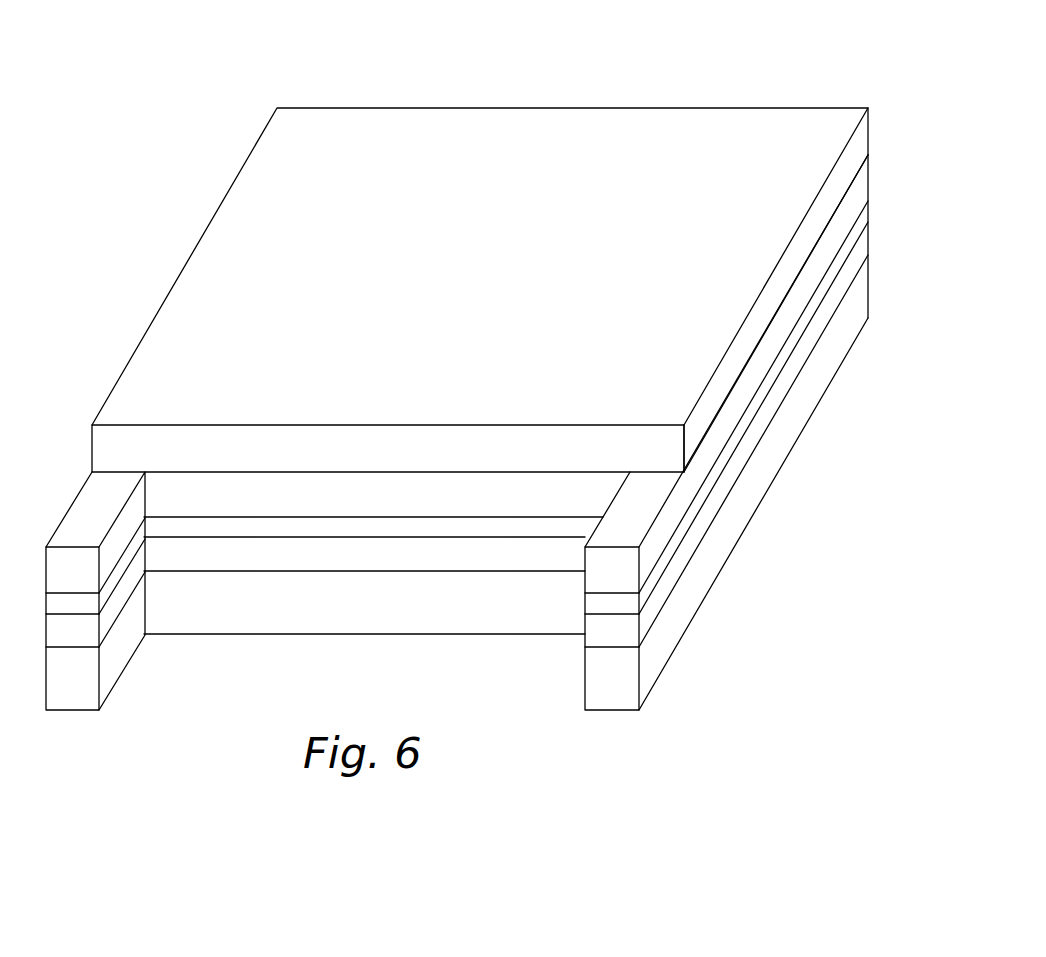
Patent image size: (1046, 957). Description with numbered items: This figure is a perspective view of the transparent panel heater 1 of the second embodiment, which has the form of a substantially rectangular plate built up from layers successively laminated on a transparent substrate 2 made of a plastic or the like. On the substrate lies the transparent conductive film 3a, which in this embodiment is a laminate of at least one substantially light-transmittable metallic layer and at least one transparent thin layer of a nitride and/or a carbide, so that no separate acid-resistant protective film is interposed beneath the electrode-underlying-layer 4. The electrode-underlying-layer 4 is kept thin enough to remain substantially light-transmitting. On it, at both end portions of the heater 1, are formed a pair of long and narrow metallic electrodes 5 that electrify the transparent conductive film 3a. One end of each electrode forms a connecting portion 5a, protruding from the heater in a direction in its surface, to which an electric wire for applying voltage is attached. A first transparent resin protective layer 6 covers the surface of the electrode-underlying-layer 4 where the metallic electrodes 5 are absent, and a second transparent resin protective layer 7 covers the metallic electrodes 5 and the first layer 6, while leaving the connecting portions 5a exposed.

The transparent panel heater 1 is at (208, 203).
The transparent substrate 2 is at (705, 557).
The transparent conductive film 3a is at (703, 517).
The electrode-underlying-layer 4 is at (749, 418).
The metallic electrodes 5 is at (757, 375).
The connecting portion 5a is at (77, 522).
The first transparent resin protective layer 6 is at (202, 493).
The second transparent resin protective layer 7 is at (863, 138).